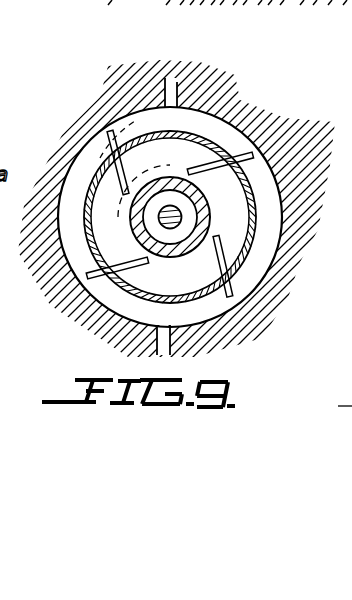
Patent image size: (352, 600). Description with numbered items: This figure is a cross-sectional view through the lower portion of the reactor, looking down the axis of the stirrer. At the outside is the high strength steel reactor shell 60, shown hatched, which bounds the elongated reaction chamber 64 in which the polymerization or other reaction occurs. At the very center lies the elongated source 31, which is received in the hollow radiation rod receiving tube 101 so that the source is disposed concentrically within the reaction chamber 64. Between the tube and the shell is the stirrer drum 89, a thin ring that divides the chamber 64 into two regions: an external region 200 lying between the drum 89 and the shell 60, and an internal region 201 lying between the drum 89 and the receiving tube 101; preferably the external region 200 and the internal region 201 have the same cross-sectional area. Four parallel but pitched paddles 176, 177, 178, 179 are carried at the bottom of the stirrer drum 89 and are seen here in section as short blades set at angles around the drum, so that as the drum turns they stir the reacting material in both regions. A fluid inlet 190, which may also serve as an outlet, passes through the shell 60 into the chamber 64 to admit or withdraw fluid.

The elongated source 31 is at (183, 218).
The reactor shell 60 is at (320, 297).
The elongated reaction chamber 64 is at (262, 228).
The drum 89 is at (253, 211).
The hollow radiation rod receiving tube 101 is at (178, 158).
The paddle 176 is at (103, 141).
The paddle 177 is at (247, 148).
The paddle 178 is at (233, 290).
The paddle 179 is at (84, 266).
The fluid inlet 190 is at (177, 82).
The external region 200 is at (203, 127).
The internal region 201 is at (142, 296).